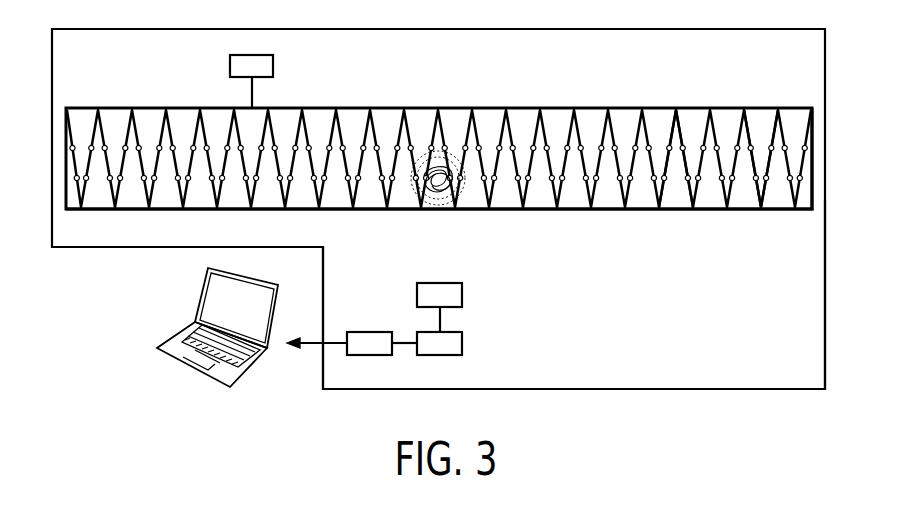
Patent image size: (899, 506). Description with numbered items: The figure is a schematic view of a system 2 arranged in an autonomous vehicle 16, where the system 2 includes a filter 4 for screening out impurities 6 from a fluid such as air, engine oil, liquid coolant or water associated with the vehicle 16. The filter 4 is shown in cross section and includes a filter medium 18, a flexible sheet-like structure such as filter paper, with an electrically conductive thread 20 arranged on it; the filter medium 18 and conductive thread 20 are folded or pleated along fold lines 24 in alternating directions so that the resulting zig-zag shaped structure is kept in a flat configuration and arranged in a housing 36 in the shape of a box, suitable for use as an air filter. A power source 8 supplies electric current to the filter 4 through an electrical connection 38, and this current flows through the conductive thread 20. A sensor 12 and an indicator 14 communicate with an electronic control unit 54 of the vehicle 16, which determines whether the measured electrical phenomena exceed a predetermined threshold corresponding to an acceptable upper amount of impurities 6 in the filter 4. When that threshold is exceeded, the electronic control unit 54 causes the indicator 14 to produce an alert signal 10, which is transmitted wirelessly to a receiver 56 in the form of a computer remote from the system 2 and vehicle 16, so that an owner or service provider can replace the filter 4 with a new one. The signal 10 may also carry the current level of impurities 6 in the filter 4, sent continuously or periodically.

The system 2 is at (718, 65).
The filter 4 is at (757, 108).
The impurities 6 is at (430, 203).
The power source 8 is at (230, 63).
The signal 10 is at (310, 346).
The sensor 12 is at (462, 292).
The indicator 14 is at (370, 355).
The autonomous vehicle 16 is at (826, 268).
The filter medium 18 is at (183, 195).
The electrically conductive thread 20 is at (89, 181).
The fold lines 24 is at (674, 108).
The housing 36 is at (675, 209).
The electrical connection 38 is at (252, 90).
The electronic control unit (ECU) 54 is at (440, 355).
The receiver 56 is at (193, 363).